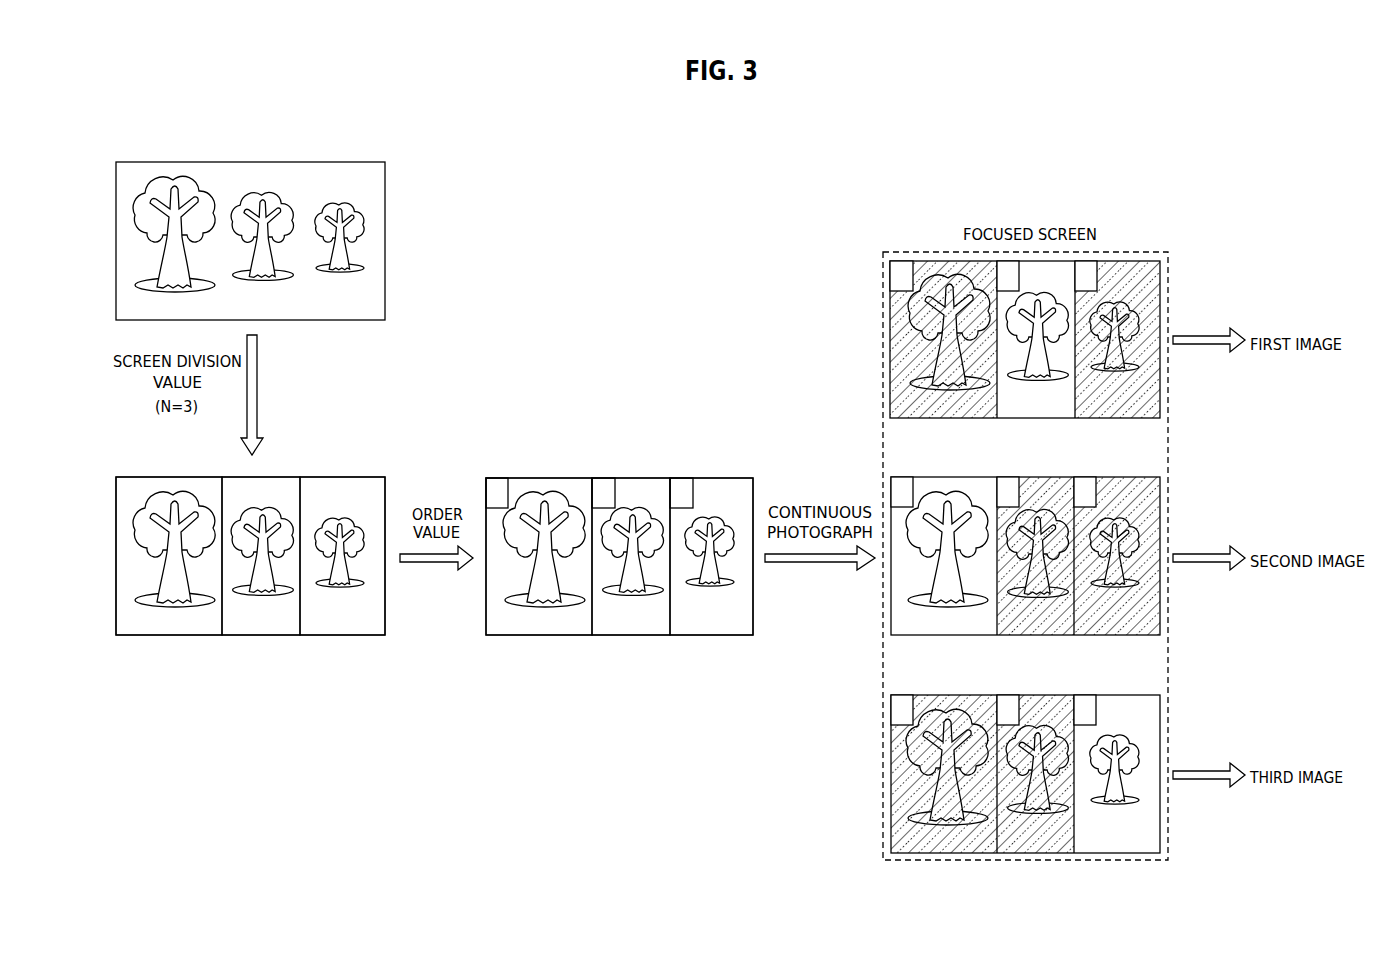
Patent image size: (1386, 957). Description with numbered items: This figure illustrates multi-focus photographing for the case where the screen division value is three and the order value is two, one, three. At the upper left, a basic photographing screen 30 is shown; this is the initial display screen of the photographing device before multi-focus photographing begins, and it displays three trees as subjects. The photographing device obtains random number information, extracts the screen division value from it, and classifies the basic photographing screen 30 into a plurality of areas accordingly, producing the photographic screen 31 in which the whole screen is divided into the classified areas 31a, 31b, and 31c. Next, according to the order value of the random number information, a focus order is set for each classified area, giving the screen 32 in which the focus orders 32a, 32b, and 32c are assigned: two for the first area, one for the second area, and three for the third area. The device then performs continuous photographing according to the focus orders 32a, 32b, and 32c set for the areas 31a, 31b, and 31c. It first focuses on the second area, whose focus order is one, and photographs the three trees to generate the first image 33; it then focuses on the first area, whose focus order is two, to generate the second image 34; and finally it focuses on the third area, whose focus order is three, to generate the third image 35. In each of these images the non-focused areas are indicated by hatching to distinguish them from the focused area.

The basic photographing screen 30 is at (372, 162).
The photographic screen 31 is at (247, 543).
The classified area 31a is at (209, 493).
The classified area 31b is at (292, 493).
The classified area 31c is at (376, 493).
The screen 32 is at (624, 541).
The focus order 32a is at (502, 478).
The focus order 32b is at (607, 478).
The focus order 32c is at (685, 478).
The first image 33 is at (1160, 296).
The second image 34 is at (1160, 508).
The third image 35 is at (1160, 726).